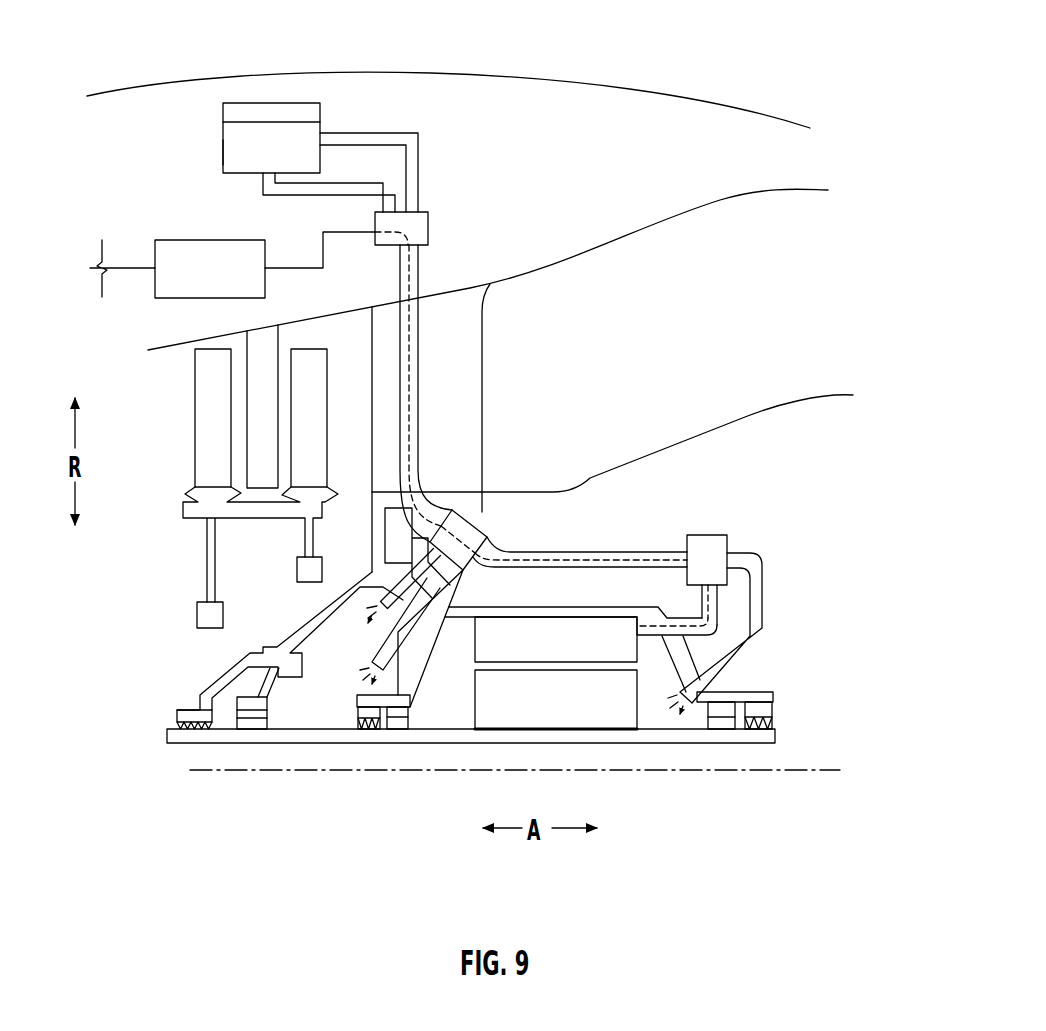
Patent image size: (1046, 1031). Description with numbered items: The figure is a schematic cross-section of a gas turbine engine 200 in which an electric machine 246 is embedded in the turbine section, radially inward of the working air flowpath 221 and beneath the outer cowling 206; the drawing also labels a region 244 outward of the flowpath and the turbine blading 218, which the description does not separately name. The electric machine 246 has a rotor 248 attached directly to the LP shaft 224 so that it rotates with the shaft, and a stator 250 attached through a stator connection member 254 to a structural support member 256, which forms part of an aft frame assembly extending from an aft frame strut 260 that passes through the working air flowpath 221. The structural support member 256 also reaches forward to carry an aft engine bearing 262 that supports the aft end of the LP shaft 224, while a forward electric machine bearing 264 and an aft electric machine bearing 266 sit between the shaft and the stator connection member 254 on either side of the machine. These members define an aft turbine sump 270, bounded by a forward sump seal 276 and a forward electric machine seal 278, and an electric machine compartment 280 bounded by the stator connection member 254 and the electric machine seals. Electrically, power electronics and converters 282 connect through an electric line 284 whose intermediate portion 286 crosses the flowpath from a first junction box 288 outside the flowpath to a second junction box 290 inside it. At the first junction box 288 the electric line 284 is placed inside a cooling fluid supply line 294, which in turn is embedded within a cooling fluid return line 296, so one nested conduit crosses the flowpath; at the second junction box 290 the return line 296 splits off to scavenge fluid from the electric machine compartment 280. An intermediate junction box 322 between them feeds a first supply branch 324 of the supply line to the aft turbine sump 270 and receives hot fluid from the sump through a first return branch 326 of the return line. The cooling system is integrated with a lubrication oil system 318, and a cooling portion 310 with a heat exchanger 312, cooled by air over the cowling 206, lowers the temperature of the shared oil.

The gas turbine engine 200 is at (448, 77).
The cowling 206 is at (597, 82).
The cavity 244 is at (515, 44).
The working air flowpath 221 is at (690, 359).
The cooling portion 310 is at (295, 101).
The heat exchanger 312 is at (272, 104).
The lubrication oil system 318 is at (187, 158).
The cooling fluid return line 296 is at (418, 140).
The cooling fluid supply line 294 is at (306, 196).
The first junction box 288 is at (429, 228).
The power electronics and converters 282 is at (229, 283).
The electric line 284 is at (293, 269).
The intermediate portion 286 is at (412, 398).
The aft frame strut 260 is at (486, 350).
The blade assembly 218 is at (208, 433).
The intermediate junction box 322 is at (485, 532).
The electric machine 246 is at (611, 603).
The second junction box 290 is at (721, 548).
The stator connection member 254 is at (455, 593).
The structural support member 256 is at (327, 588).
The aft turbine sump 270 is at (392, 610).
The first supply branch 324 is at (390, 580).
The first return branch 326 is at (405, 645).
The stator 250 is at (574, 654).
The rotor 248 is at (574, 713).
The LP shaft 224 is at (307, 735).
The forward sump seal 276 is at (171, 716).
The aft engine bearing 262 is at (252, 739).
The forward electric machine seal 278 is at (350, 721).
The forward electric machine bearing 264 is at (406, 739).
The electric machine compartment 280 is at (781, 717).
The aft electric machine bearing 266 is at (714, 747).